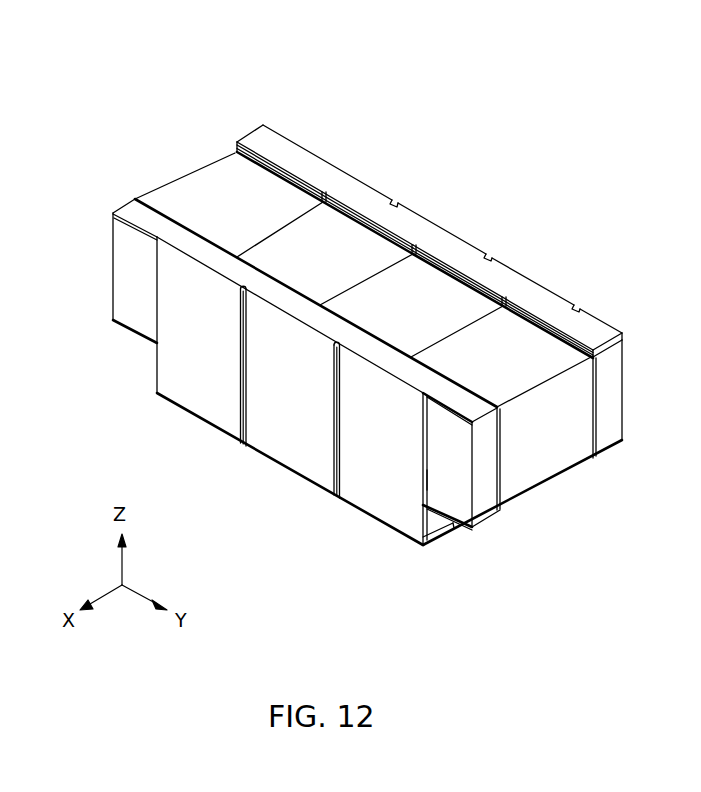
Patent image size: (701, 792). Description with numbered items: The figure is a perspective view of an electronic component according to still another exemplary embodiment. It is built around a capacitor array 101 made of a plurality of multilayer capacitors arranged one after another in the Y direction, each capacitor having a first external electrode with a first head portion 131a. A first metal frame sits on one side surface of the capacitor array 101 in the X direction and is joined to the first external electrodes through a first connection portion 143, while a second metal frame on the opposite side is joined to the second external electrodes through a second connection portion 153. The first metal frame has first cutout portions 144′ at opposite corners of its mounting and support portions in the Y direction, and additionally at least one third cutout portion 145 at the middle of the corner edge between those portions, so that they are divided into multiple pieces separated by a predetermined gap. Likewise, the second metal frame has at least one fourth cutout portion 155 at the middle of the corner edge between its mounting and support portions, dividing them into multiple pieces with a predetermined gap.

The capacitor array 101 is at (178, 170).
The first head portion 131a is at (124, 273).
The first connection portion 143 is at (420, 380).
The first cutout portions 144′ is at (157, 367).
The third cutout portion 145 is at (238, 370).
The second connection portion 153 is at (520, 288).
The fourth cutout portion 155 is at (397, 198).